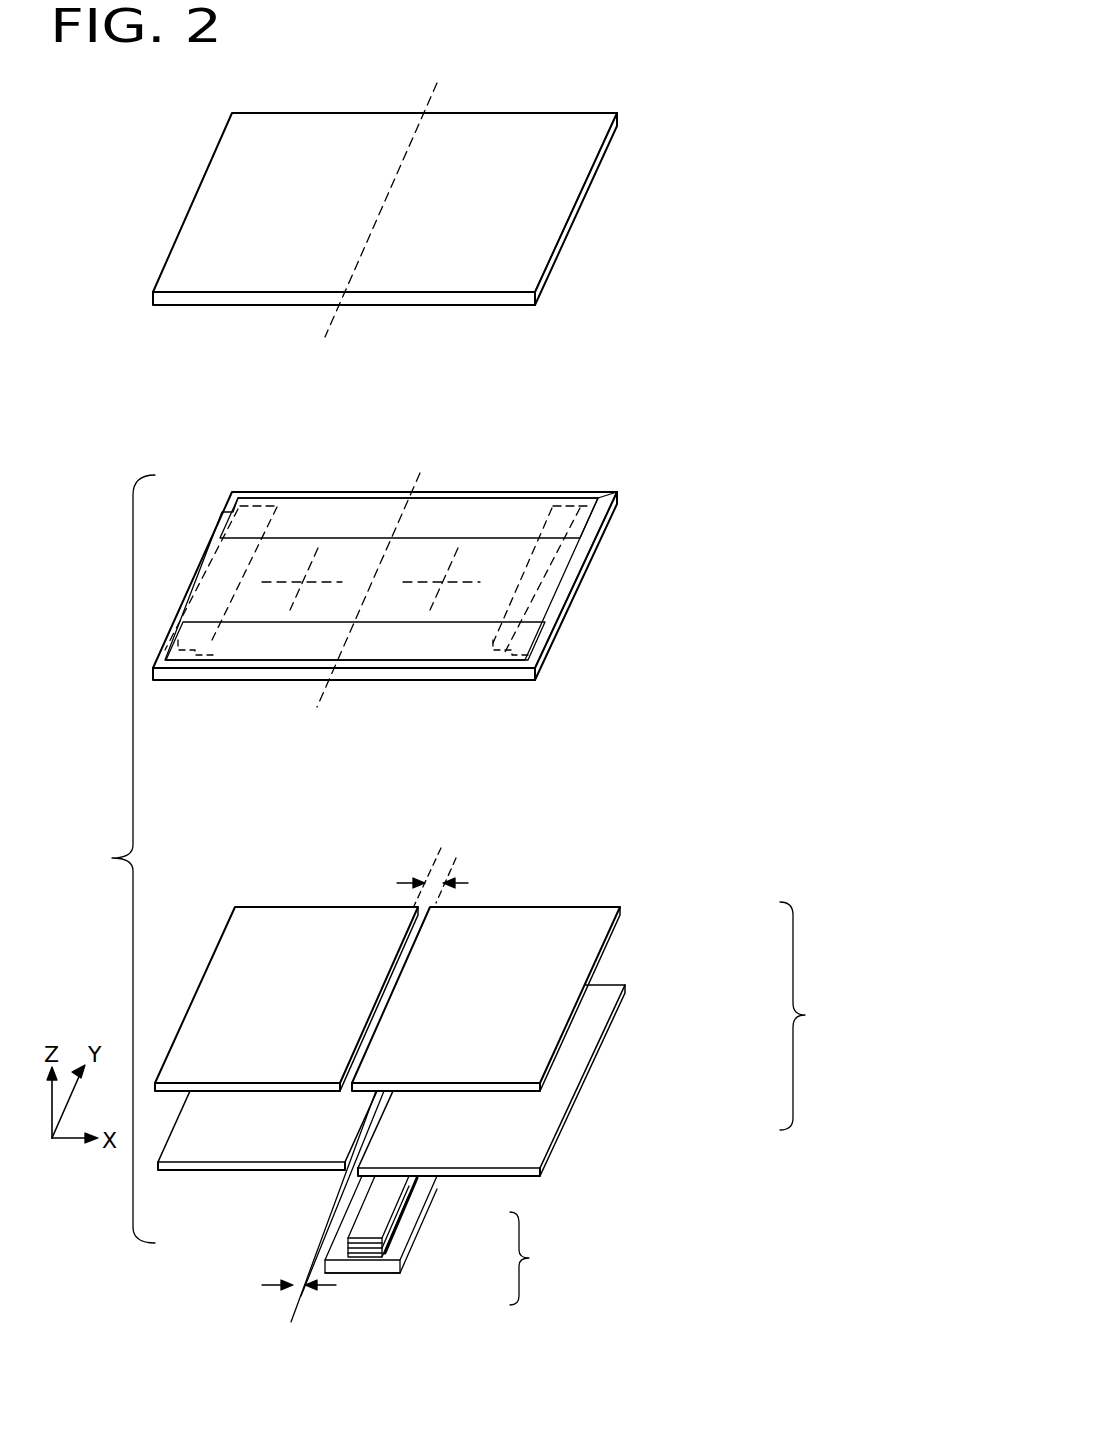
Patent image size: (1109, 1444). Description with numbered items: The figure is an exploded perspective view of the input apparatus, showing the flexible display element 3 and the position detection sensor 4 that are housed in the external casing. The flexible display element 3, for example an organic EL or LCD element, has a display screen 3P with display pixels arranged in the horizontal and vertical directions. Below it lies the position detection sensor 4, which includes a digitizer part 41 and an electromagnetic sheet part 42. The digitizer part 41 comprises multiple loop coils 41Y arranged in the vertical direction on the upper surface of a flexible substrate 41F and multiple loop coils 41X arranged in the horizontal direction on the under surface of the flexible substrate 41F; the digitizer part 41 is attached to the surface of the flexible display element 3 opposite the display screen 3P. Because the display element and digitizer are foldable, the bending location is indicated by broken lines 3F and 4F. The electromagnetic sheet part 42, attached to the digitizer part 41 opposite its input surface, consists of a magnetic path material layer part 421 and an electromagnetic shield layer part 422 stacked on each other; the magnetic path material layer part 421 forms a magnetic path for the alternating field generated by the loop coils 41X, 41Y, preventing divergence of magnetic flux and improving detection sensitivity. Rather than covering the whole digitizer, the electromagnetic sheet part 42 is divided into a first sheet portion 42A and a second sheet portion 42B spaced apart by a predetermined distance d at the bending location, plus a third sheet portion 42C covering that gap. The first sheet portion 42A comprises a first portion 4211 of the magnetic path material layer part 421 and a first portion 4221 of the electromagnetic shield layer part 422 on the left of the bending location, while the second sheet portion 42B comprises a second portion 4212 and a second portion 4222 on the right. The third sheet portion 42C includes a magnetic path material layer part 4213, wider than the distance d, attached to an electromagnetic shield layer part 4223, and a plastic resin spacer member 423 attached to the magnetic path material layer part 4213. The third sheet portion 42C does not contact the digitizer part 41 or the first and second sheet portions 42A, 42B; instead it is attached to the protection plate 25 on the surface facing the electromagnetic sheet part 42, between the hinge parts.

The flexible display element 3 is at (400, 197).
The display screen 3P is at (220, 162).
The broken line 3F is at (413, 138).
The position detection sensor 4 is at (522, 894).
The digitizer part 41 is at (497, 585).
The loop coils 41Y is at (333, 497).
The loop coils 41X is at (548, 603).
The flexible substrate 41F is at (607, 497).
The broken line 4F is at (322, 692).
The electromagnetic sheet part 42 is at (557, 1089).
The magnetic path material layer part 421 is at (424, 959).
The first portion of the magnetic path material layer part 4211 is at (230, 935).
The second portion of the magnetic path material layer part 4212 is at (586, 915).
The first sheet portion 42A is at (277, 895).
The second sheet portion 42B is at (547, 895).
The electromagnetic shield layer part 422 is at (469, 1107).
The first portion of the electromagnetic shield layer part 4221 is at (252, 1150).
The second portion of the electromagnetic shield layer part 4222 is at (528, 1152).
The third sheet portion 42C is at (457, 1251).
The spacer member 423 is at (385, 1215).
The magnetic path material layer part 4213 is at (385, 1252).
The electromagnetic shield layer part 4223 is at (408, 1262).
The protection plate 25 is at (357, 1268).